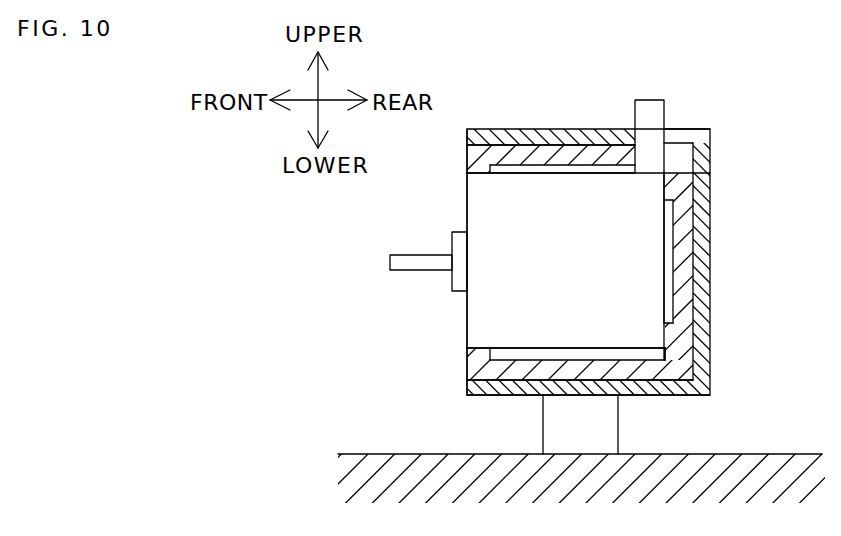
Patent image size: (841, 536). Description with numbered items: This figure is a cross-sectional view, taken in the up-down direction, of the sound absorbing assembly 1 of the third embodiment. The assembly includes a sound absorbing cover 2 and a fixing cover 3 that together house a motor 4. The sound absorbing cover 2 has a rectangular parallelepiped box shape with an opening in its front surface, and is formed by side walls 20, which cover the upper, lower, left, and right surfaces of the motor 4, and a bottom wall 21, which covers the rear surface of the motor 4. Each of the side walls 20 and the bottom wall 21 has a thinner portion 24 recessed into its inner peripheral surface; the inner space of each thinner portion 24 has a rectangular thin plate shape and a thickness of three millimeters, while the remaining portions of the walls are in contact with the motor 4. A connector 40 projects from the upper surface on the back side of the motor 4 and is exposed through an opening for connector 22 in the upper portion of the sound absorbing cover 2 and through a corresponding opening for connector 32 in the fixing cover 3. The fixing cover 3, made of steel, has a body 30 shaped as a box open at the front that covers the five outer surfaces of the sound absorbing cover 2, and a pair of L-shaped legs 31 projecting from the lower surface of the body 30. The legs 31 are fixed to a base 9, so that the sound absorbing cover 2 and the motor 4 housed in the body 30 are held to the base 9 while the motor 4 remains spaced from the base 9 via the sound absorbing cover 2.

The sound absorbing assembly 1 is at (740, 63).
The sound absorbing cover 2 is at (497, 157).
The side walls 20 is at (558, 152).
The bottom wall 21 is at (678, 239).
The opening for connector 22 is at (682, 173).
The thinner portion 24 is at (540, 165).
The fixing cover 3 is at (705, 317).
The body 30 is at (705, 366).
The legs 31 is at (612, 428).
The opening for connector 32 is at (698, 173).
The motor 4 is at (477, 305).
The connector 40 is at (647, 115).
The base 9 is at (403, 465).